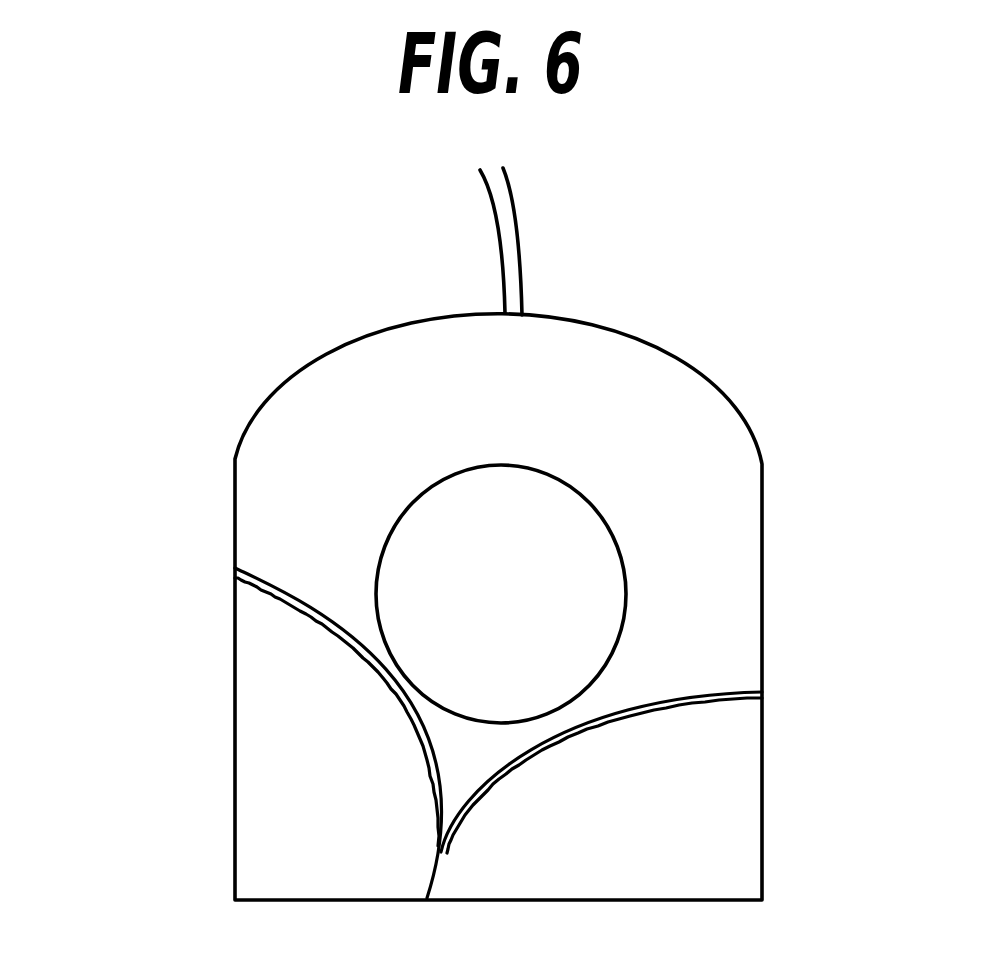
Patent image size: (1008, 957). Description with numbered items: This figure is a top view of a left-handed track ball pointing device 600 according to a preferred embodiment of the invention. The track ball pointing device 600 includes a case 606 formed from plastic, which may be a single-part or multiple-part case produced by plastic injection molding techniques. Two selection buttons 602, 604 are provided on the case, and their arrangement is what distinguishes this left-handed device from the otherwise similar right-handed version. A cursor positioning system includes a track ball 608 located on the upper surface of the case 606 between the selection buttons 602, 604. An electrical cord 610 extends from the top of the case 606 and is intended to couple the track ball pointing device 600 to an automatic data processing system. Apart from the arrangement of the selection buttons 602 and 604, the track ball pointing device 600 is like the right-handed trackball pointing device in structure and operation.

The track ball pointing device 600 is at (212, 480).
The selection button 602 is at (315, 793).
The selection button 604 is at (712, 748).
The case 606 is at (720, 393).
The track ball 608 is at (618, 547).
The electrical cord 610 is at (508, 212).